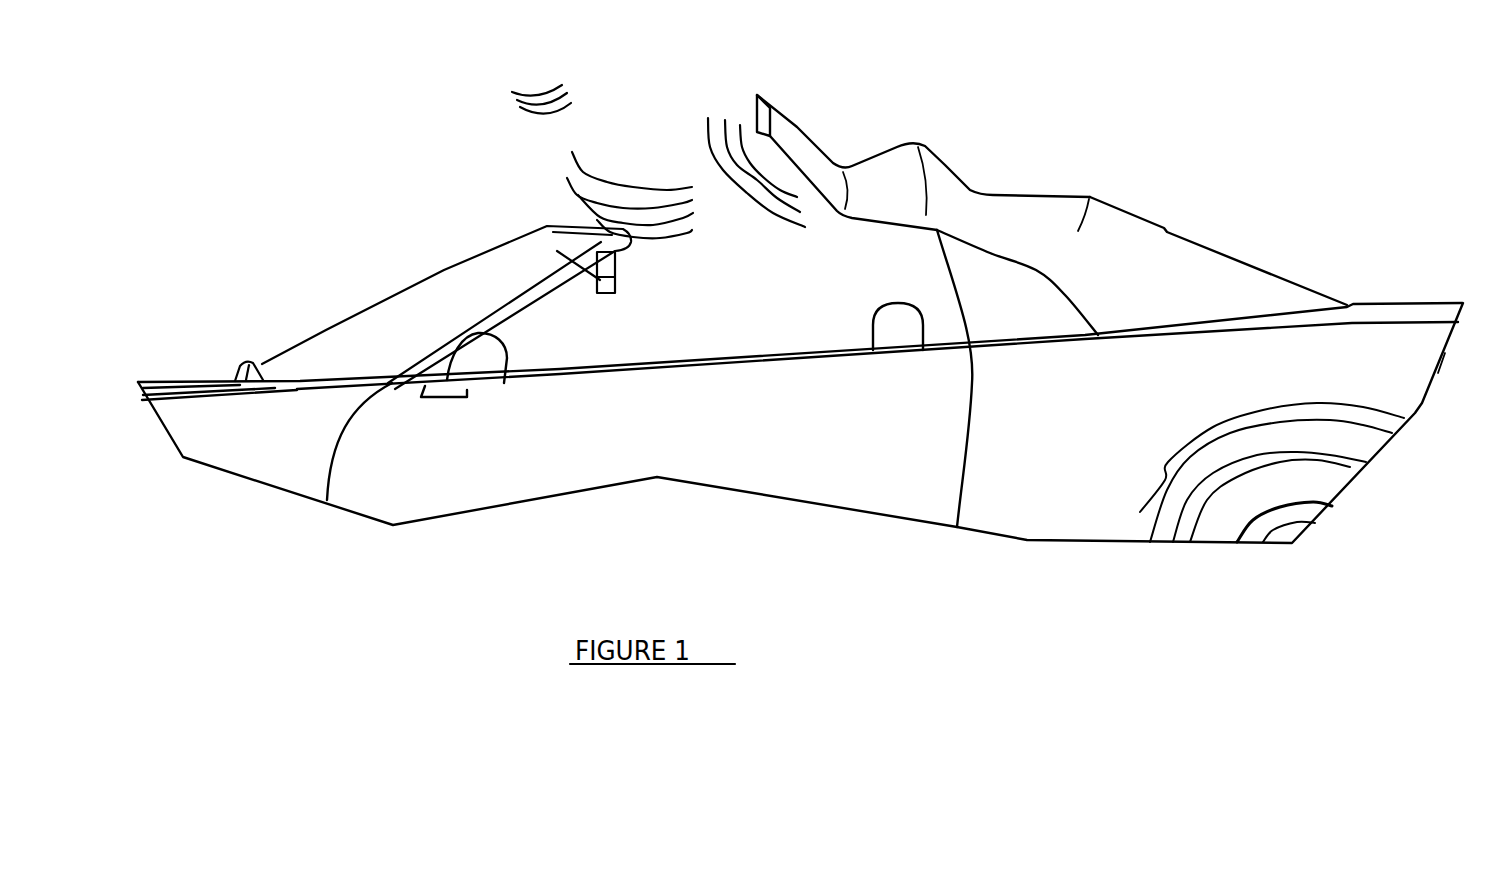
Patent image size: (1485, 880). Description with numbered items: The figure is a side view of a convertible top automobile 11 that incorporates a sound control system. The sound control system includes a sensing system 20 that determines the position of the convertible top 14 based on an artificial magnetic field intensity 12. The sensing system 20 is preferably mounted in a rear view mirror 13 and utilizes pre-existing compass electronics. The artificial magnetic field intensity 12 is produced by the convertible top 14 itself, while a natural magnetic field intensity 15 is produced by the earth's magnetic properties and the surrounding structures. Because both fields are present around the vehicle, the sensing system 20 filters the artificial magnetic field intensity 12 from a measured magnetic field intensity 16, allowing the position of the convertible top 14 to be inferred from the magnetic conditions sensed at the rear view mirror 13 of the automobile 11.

The convertible top automobile 11 is at (195, 378).
The artificial magnetic field intensity 12 is at (727, 127).
The rear view mirror 13 is at (545, 262).
The convertible top 14 is at (797, 128).
The natural magnetic field intensity 15 is at (533, 90).
The measured magnetic field intensity 16 is at (572, 168).
The sensing system 20 is at (557, 251).